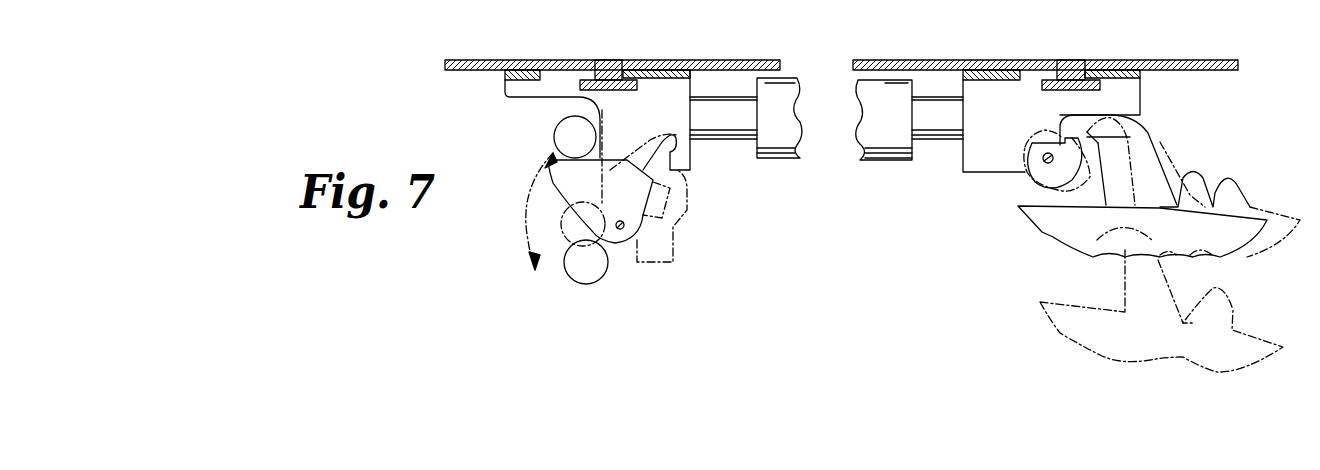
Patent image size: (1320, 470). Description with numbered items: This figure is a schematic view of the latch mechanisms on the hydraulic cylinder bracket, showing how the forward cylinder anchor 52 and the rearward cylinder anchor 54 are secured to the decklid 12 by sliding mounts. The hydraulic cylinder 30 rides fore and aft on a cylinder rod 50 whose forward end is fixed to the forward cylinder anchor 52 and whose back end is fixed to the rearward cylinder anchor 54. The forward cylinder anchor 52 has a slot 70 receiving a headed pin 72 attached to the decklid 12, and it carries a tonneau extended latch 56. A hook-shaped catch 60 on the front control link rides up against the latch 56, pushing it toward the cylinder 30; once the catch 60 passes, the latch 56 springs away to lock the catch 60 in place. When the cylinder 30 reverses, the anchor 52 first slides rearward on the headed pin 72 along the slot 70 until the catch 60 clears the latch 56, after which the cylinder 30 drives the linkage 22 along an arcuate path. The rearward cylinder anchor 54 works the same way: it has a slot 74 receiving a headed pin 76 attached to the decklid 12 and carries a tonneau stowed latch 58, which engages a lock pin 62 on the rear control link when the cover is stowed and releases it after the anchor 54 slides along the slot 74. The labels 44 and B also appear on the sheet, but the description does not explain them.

The decklid 12 is at (652, 60).
The slot 74 is at (550, 80).
The headed pin 76 is at (609, 90).
The tonneau stowed latch 58 is at (560, 185).
The rearward cylinder anchor 54 is at (680, 120).
The cylinder rod 50 is at (732, 125).
The lock pin 62 is at (600, 282).
The forward cylinder anchor 52 is at (1000, 87).
The slot 70 is at (1090, 60).
The headed pin 72 is at (1092, 90).
The catch 60 is at (1143, 138).
The tonneau extended latch 56 is at (1035, 180).
The hydraulic cylinder 30 is at (883, 145).
The linkage 22 is at (1050, 237).
The element 44 is at (296, 8).
The position B is at (235, 13).